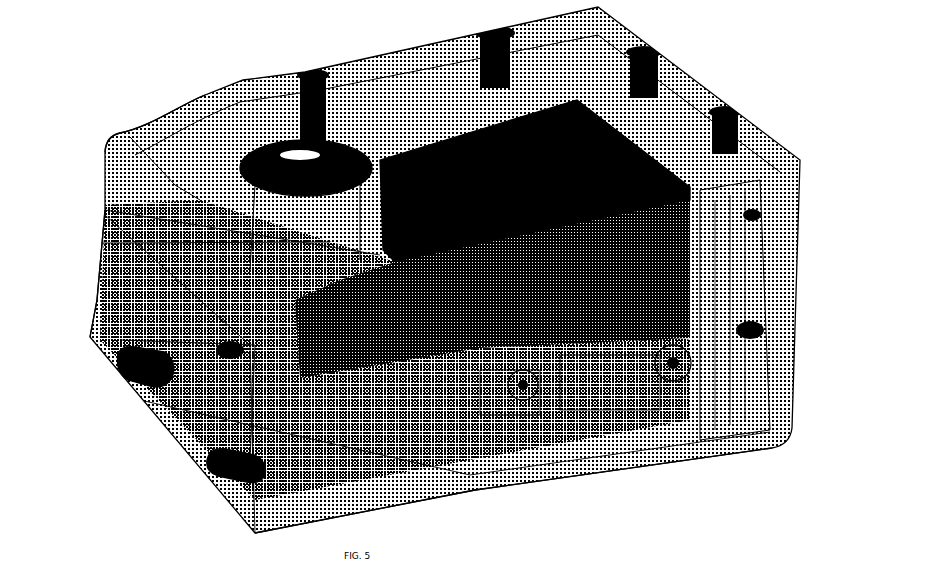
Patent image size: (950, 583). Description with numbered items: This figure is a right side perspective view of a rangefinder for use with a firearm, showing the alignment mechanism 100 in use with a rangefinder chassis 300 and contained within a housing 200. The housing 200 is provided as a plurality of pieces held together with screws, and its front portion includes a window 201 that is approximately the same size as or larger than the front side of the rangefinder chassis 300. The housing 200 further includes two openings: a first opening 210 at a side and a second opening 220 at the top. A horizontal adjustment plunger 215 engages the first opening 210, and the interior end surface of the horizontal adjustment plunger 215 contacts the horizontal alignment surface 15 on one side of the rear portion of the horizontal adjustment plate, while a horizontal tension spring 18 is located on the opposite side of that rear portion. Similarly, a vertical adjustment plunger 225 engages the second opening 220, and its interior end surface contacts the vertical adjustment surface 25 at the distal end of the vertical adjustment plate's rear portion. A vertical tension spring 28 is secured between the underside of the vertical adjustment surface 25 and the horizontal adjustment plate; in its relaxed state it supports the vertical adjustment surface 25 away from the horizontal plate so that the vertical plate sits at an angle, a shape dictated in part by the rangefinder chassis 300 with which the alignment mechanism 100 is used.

The horizontal alignment surface 15 is at (235, 285).
The horizontal tension spring 18 is at (393, 463).
The vertical adjustment surface 25 is at (220, 350).
The vertical tension spring 28 is at (360, 320).
The alignment mechanism 100 is at (552, 407).
The housing 200 is at (765, 440).
The window 201 is at (723, 230).
The first opening 210 is at (132, 137).
The horizontal adjustment plunger 215 is at (150, 318).
The second opening 220 is at (266, 147).
The vertical adjustment plunger 225 is at (103, 243).
The rangefinder chassis 300 is at (457, 127).